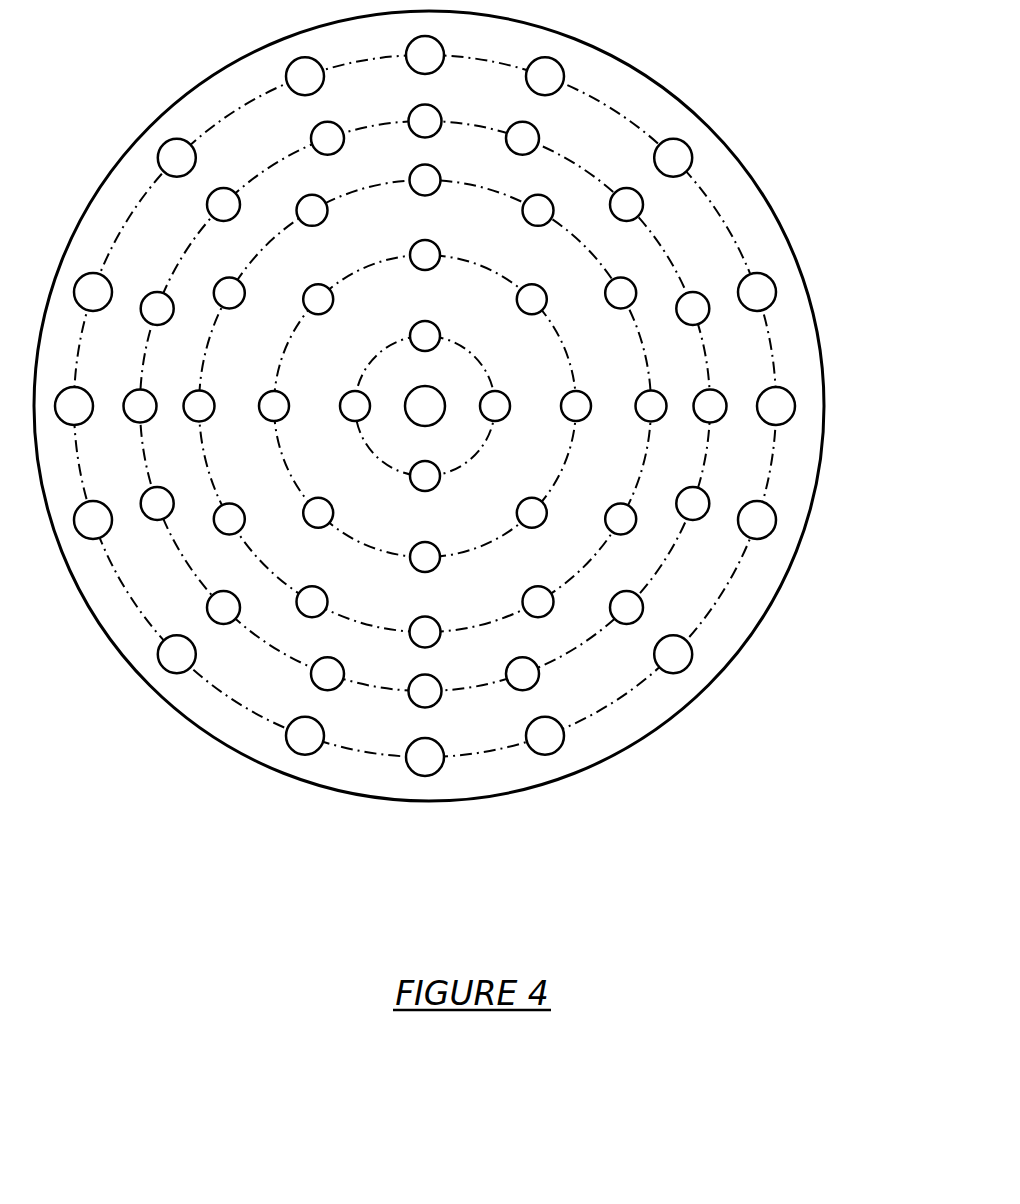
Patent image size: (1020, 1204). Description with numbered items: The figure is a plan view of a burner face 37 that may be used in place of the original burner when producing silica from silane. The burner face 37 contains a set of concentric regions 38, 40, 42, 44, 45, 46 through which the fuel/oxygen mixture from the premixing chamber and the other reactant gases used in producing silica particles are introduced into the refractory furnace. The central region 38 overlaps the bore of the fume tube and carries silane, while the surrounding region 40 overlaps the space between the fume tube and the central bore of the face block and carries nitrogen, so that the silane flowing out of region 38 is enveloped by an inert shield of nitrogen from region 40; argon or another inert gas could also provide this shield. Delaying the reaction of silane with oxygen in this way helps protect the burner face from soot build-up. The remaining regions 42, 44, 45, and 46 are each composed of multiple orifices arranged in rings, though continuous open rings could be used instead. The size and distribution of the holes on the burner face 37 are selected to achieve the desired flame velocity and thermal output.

The burner face 37 is at (154, 118).
The region 38 is at (430, 413).
The region 40 is at (440, 335).
The region 42 is at (433, 243).
The region 44 is at (549, 203).
The region 45 is at (702, 307).
The region 46 is at (782, 407).